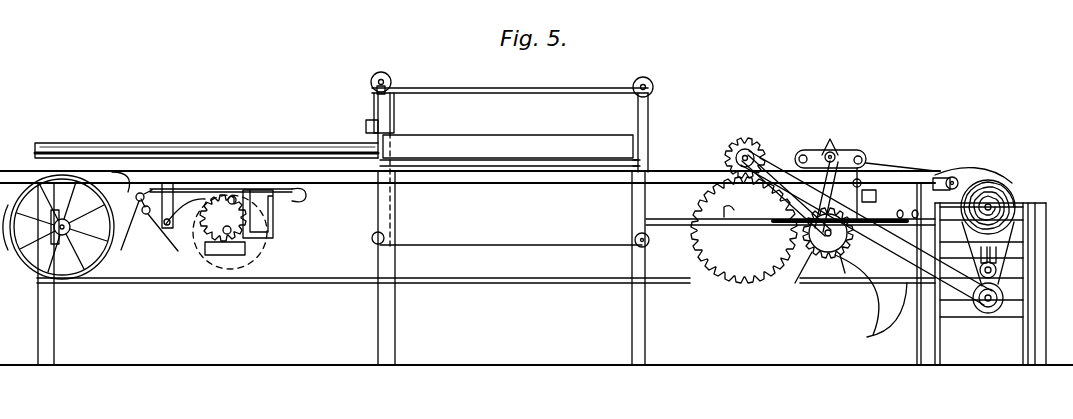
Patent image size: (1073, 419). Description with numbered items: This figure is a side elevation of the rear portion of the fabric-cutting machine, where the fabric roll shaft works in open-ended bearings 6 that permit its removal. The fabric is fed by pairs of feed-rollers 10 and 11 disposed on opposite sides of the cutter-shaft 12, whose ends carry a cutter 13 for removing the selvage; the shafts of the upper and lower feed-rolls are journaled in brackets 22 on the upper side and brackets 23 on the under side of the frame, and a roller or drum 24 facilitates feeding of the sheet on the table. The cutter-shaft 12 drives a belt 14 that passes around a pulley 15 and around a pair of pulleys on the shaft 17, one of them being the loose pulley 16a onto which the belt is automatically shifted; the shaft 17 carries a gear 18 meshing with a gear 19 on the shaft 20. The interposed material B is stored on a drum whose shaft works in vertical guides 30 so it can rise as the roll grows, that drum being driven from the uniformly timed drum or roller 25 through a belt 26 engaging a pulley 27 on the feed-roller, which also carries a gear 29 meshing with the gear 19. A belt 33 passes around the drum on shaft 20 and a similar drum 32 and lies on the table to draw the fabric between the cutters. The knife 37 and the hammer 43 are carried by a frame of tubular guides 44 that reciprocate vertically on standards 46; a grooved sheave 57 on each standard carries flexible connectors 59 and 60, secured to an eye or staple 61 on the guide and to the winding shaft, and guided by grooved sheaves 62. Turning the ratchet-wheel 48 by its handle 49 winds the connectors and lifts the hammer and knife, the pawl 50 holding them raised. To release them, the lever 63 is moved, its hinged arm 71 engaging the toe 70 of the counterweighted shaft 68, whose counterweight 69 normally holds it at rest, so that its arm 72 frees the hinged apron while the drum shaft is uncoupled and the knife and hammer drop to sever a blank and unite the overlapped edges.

The open-ended bearings 6 is at (1011, 192).
The feed-rollers 10 is at (870, 158).
The feed-rollers 11 is at (823, 146).
The cutter-shaft 12 is at (856, 149).
The cutter 13 is at (831, 150).
The belt 14 is at (874, 171).
The pulley 15 is at (841, 154).
The loose pulley 16a is at (859, 278).
The shaft 17 is at (795, 276).
The gear 18 is at (851, 316).
The gear 19 is at (804, 240).
The shaft 20 is at (744, 230).
The brackets 22 is at (808, 154).
The brackets 23 is at (873, 197).
The roller or drum 24 is at (957, 178).
The drum or roller 25 is at (988, 314).
The belt 26 is at (868, 317).
The pulley 27 is at (748, 152).
The gear 29 is at (728, 159).
The vertical guides 30 is at (1000, 257).
The drum 32 is at (101, 263).
The belt 33 is at (282, 284).
The knife 37 is at (504, 140).
The hammer or fabric-clamping element 43 is at (180, 157).
The tubular guide 44 is at (398, 130).
The standards or pillars 46 is at (395, 106).
The ratchet-wheel 48 is at (221, 218).
The handle 49 is at (252, 206).
The pawl 50 is at (206, 189).
The grooved sheave 57 is at (392, 86).
The cord or chain 59 is at (373, 97).
The cord or chain 60 is at (393, 208).
The eye or staple 61 is at (368, 124).
The grooved sheaves 62 is at (373, 243).
The lever 63 is at (301, 199).
The shaft 68 is at (132, 228).
The counterweight 69 is at (166, 237).
The toe or projection 70 is at (207, 148).
The hinged arm 71 is at (256, 190).
The arm 72 is at (114, 173).
The material B is at (966, 243).